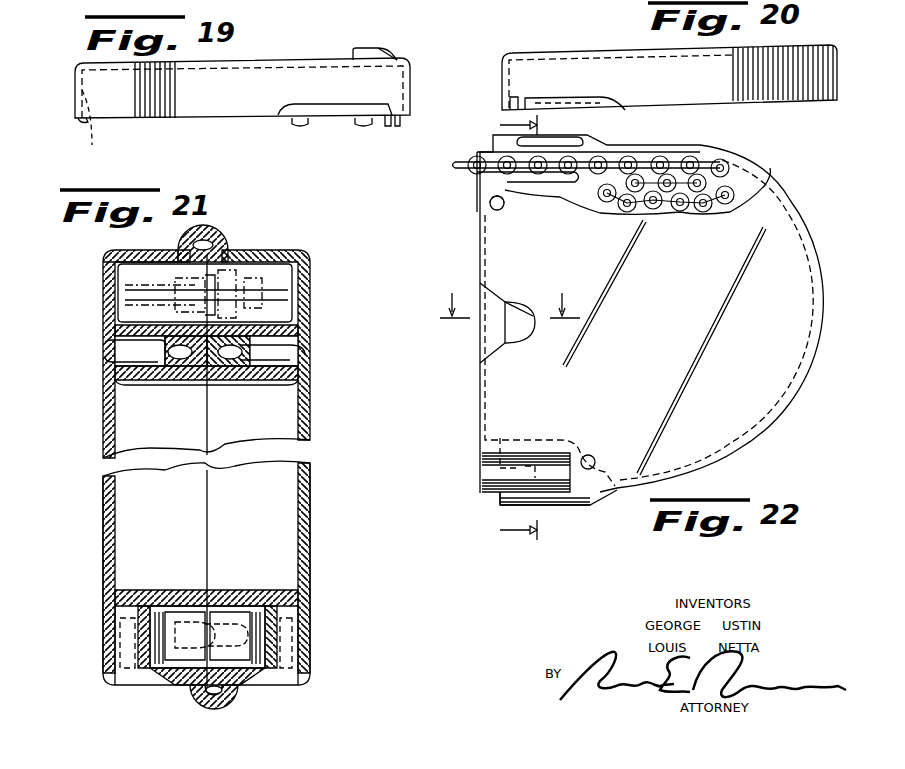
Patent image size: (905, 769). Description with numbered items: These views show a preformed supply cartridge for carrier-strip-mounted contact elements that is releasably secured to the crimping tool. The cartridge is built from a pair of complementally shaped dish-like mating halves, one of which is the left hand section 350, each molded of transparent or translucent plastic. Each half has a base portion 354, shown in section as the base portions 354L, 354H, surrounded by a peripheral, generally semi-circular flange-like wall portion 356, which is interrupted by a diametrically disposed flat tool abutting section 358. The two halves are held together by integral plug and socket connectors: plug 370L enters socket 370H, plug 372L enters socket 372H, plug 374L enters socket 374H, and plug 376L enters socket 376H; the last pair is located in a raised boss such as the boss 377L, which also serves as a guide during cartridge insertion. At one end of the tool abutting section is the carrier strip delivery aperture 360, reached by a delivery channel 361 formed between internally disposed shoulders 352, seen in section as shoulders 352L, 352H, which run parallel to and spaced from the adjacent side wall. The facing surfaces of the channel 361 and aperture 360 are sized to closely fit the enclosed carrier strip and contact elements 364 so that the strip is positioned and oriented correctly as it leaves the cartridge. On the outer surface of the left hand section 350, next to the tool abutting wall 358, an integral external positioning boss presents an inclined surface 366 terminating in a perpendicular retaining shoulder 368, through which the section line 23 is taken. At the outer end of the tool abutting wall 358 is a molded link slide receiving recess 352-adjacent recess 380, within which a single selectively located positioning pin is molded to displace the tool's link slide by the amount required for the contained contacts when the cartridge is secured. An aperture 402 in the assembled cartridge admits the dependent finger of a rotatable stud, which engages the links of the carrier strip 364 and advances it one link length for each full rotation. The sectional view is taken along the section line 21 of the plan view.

In FIG. 19, the left hand section 350 is at (205, 120).
In FIG. 20, the internally disposed shoulder 352 is at (768, 112).
In FIG. 21, the internally disposed shoulder of right hand section 352H is at (165, 326).
In FIG. 21, the internally disposed shoulder of left hand section 352L is at (245, 326).
In FIG. 19, the base portion 354 is at (238, 63).
In FIG. 20, the base portion 354 is at (692, 50).
In FIG. 21, the base portion of right hand section 354H is at (103, 440).
In FIG. 21, the base portion of left hand section 354L is at (310, 418).
In FIG. 19, the flange-like wall portion 356 is at (77, 122).
In FIG. 20, the flange-like wall portion 356 is at (826, 44).
In FIG. 22, the tool abutting section 358 is at (480, 252).
In FIG. 22, the carrier strip delivery aperture 360 is at (477, 170).
In FIG. 22, the delivery channel 361 is at (553, 170).
In FIG. 21, the delivery channel 361 is at (262, 262).
In FIG. 22, the carrier strip and contact elements 364 is at (728, 172).
In FIG. 19, the inclined surface 366 is at (358, 48).
In FIG. 22, the inclined surface 366 is at (493, 292).
In FIG. 19, the retaining shoulder 368 is at (380, 48).
In FIG. 22, the retaining shoulder 368 is at (510, 315).
In FIG. 21, the socket 370H is at (205, 230).
In FIG. 19, the plug 370L is at (310, 122).
In FIG. 21, the plug 370L is at (212, 243).
In FIG. 21, the socket 372H is at (165, 352).
In FIG. 19, the plug 372L is at (398, 126).
In FIG. 21, the plug 372L is at (250, 352).
In FIG. 21, the socket 374H is at (166, 612).
In FIG. 19, the plug 374L is at (300, 125).
In FIG. 21, the plug 374L is at (195, 605).
In FIG. 22, the socket 376H is at (560, 0).
In FIG. 21, the socket 376H is at (205, 690).
In FIG. 19, the plug 376L is at (353, 0).
In FIG. 21, the plug 376L is at (222, 702).
In FIG. 19, the raised boss 377L is at (310, 0).
In FIG. 22, the link slide receiving recess 380 is at (483, 480).
In FIG. 21, the link slide receiving recess 380 is at (250, 660).
In FIG. 19, the aperture 402 is at (337, 104).
In FIG. 21, the aperture 402 is at (135, 262).
In FIG. 22, the section line 21— 21 is at (528, 327).
In FIG. 22, the section line 23— 23 is at (510, 315).